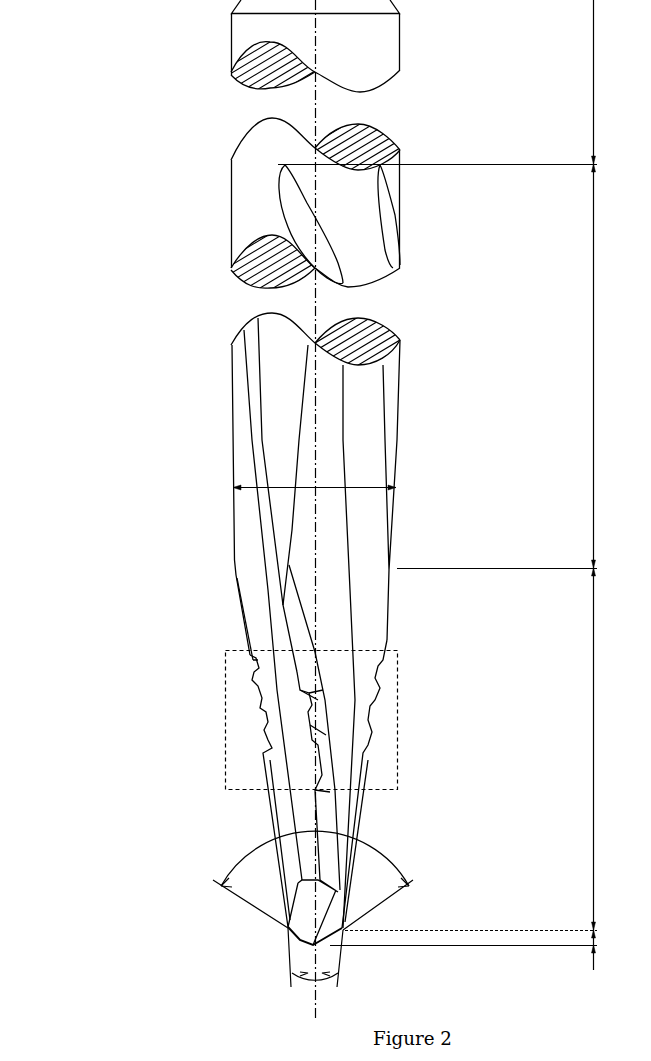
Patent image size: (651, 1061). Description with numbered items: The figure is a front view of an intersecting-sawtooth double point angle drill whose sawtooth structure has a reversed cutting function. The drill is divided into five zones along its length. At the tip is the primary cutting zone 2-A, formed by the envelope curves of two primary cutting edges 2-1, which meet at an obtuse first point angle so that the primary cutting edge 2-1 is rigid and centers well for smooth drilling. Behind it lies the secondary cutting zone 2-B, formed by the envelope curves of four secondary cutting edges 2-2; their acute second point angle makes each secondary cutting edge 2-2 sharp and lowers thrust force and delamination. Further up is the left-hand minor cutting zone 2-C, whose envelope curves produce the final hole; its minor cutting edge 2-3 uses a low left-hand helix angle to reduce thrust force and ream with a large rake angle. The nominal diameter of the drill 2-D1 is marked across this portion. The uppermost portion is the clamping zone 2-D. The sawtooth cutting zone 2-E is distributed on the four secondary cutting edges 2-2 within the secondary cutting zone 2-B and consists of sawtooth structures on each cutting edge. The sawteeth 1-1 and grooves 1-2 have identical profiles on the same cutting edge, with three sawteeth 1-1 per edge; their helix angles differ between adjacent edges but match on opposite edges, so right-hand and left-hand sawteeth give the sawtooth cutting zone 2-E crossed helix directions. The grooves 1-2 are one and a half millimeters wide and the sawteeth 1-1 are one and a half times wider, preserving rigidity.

The primary cutting edge 2-1 is at (329, 937).
The secondary cutting edge 2-2 is at (387, 640).
The minor cutting edge 2-3 is at (387, 547).
The sawtooth cutting zone 2-E is at (397, 720).
The sawteeth 1-1 is at (318, 748).
The grooves 1-2 is at (308, 723).
The primary cutting zone 2-A is at (475, 946).
The secondary cutting zone 2-B is at (483, 749).
The minor cutting zone 2-C is at (509, 370).
The clamping zone 2-D is at (449, 86).
The nominal diameter of the drill 2-D1 is at (314, 477).